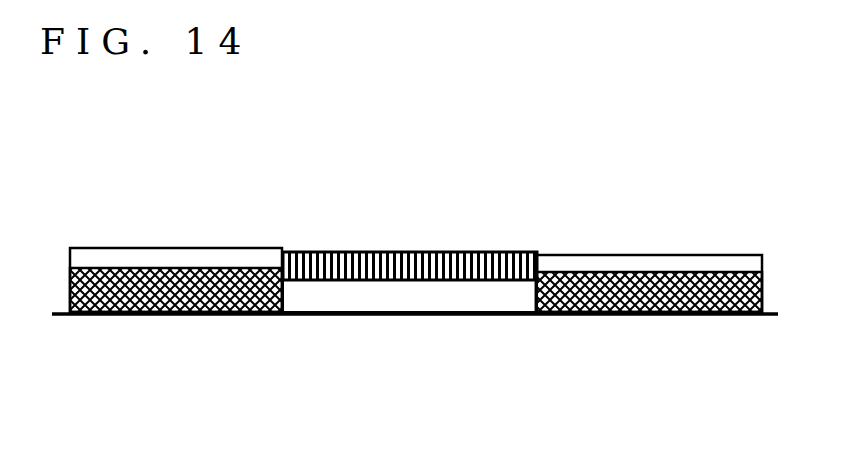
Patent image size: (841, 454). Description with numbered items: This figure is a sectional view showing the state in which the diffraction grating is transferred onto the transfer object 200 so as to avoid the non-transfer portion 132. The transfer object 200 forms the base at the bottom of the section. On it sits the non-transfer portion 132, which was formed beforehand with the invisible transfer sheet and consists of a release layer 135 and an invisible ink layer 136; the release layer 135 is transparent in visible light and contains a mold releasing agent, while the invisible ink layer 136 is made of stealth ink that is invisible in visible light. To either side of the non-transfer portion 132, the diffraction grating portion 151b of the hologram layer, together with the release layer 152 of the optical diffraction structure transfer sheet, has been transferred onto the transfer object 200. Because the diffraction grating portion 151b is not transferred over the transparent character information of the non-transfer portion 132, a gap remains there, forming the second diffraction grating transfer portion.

The non-transfer portion 132 is at (417, 243).
The release layer 135 is at (537, 264).
The invisible ink layer 136 is at (552, 318).
The diffraction grating portion 151b is at (172, 283).
The release layer 152 is at (87, 248).
The transfer object 200 is at (190, 316).